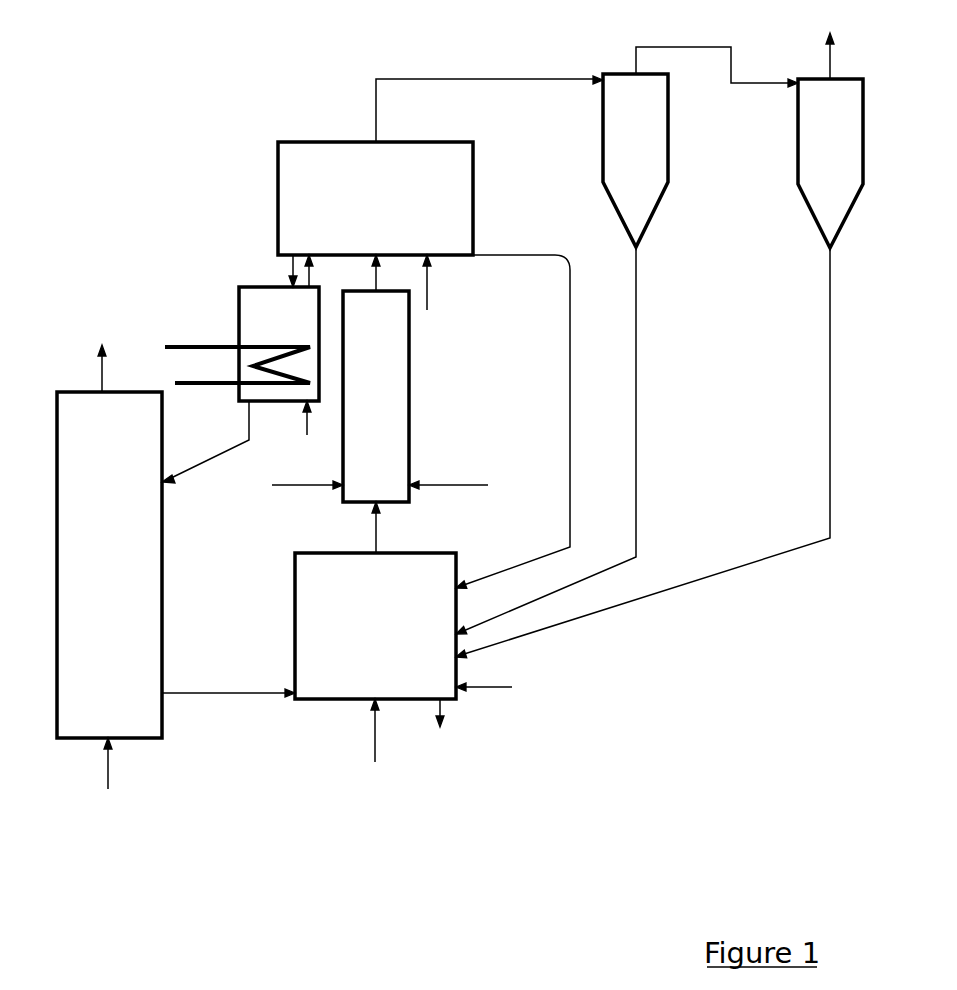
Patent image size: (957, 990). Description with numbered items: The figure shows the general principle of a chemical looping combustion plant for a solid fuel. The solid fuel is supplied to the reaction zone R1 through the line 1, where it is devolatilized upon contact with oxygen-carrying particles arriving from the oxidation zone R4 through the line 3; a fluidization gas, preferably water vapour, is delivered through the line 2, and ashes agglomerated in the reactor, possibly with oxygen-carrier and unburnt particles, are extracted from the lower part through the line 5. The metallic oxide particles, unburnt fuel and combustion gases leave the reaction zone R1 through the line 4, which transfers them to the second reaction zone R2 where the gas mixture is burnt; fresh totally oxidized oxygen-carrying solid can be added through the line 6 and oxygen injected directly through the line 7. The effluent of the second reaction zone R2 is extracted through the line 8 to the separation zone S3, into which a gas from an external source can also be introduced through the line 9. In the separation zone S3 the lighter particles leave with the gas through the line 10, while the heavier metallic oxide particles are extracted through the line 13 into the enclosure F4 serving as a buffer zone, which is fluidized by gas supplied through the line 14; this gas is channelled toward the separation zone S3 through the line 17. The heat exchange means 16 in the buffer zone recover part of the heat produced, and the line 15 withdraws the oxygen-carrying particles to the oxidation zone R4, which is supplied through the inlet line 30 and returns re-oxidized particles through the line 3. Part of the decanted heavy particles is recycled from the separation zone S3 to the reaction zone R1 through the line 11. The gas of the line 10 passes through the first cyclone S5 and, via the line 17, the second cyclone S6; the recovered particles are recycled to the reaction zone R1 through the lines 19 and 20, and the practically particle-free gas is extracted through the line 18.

The line 1 is at (500, 688).
The line 2 is at (375, 750).
The line 3 is at (230, 687).
The line 4 is at (378, 530).
The line 5 is at (442, 713).
The line 6 is at (302, 486).
The line 7 is at (450, 486).
The line 8 is at (382, 272).
The line 9 is at (427, 290).
The line 10 is at (376, 108).
The line 11 is at (548, 249).
The line 13 is at (293, 275).
The line 14 is at (306, 435).
The line 15 is at (190, 467).
The heat exchange means 16 is at (203, 346).
The line 17 is at (633, 47).
The line 18 is at (827, 53).
The line 19 is at (638, 381).
The line 20 is at (827, 399).
The inlet stream to reactor R4 30 is at (108, 770).
The separation zone S3 is at (375, 198).
The first cyclone S5 is at (635, 160).
The second cyclone S6 is at (830, 163).
The buffer zone enclosure F4 is at (260, 315).
The reaction zone R1 is at (375, 626).
The second reaction zone R2 is at (376, 396).
The oxidation zone R4 is at (109, 541).